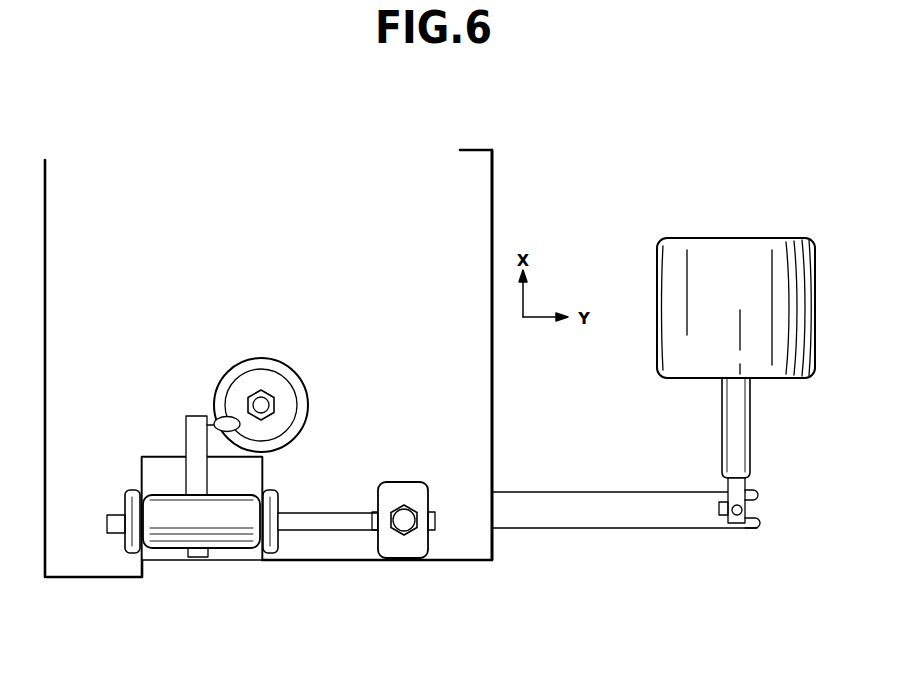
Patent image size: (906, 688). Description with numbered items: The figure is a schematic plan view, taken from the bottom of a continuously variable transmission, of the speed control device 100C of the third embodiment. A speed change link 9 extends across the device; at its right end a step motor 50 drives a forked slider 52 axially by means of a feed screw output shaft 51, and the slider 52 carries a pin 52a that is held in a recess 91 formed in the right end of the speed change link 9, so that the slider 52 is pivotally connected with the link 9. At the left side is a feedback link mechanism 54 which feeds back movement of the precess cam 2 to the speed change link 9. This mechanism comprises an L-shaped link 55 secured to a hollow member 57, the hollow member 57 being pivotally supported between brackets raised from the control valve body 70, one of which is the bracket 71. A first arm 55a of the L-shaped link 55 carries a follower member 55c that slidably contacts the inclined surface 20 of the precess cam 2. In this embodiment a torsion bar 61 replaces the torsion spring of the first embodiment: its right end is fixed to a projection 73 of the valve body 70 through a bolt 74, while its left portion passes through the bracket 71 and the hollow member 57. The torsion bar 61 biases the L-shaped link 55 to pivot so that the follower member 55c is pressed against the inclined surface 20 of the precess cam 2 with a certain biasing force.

The speed control device 100C is at (570, 101).
The precess cam 2 is at (304, 385).
The inclined surface 20 is at (262, 358).
The speed change link 9 is at (638, 522).
The step motor 50 is at (708, 248).
The feed screw output shaft 51 is at (750, 412).
The forked slider 52 is at (748, 478).
The pin 52a is at (738, 518).
The feedback link mechanism 54 is at (144, 409).
The L-shaped link 55 is at (186, 476).
The first arm 55a is at (188, 487).
The follower member 55c is at (223, 417).
The hollow member 57 is at (178, 540).
The torsion bar 61 is at (326, 510).
The control valve body 70 is at (470, 414).
The bracket 71 is at (126, 553).
The projection 73 is at (428, 542).
The bolt 74 is at (404, 504).
The recess 91 is at (760, 512).